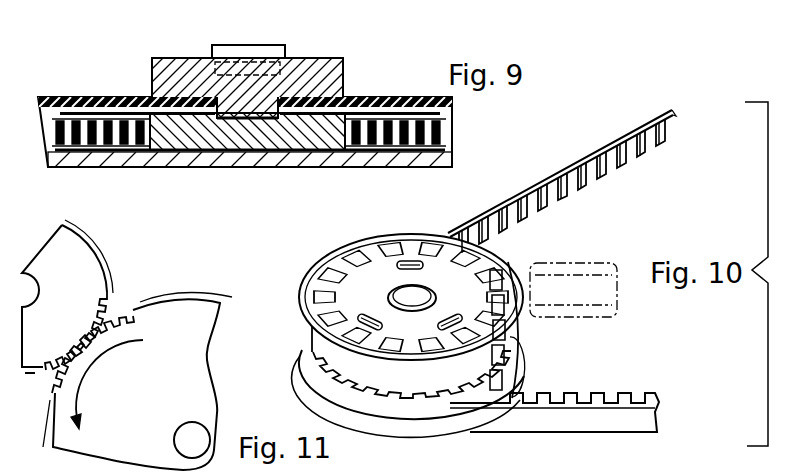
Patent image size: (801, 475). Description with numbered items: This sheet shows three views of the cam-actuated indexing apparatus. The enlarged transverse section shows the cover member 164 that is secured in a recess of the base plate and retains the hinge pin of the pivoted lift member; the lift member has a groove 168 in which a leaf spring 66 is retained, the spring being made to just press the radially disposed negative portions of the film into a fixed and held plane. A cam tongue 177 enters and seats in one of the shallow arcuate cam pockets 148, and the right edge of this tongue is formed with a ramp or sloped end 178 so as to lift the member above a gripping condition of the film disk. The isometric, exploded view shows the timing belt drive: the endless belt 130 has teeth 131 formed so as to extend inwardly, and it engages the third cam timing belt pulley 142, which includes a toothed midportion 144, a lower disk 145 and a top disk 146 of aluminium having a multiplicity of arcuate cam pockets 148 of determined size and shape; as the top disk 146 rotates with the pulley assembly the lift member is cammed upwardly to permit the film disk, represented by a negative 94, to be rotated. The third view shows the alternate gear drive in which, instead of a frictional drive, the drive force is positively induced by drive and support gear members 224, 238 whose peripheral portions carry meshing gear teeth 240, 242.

In FIG. 9, the leaf spring 66 is at (248, 52).
In FIG. 10, the negatives 94 is at (588, 278).
In FIG. 9, the belt 130 is at (455, 125).
In FIG. 10, the belt 130 is at (617, 138).
In FIG. 10, the teeth 131 is at (621, 172).
In FIG. 9, the third cam timing belt pulley 142 is at (196, 135).
In FIG. 10, the third cam timing belt pulley 142 is at (430, 320).
In FIG. 10, the toothed midportion 144 is at (470, 378).
In FIG. 10, the lower disk 145 is at (518, 380).
In FIG. 10, the top disk 146 is at (385, 262).
In FIG. 10, the arcuate cam pockets 148 is at (320, 297).
In FIG. 9, the cover member 164 is at (56, 97).
In FIG. 9, the groove 168 is at (340, 72).
In FIG. 9, the cam tongue 177 is at (283, 77).
In FIG. 9, the ramp or sloped end 178 is at (330, 166).
In FIG. 11, the drive gear member 224 is at (187, 310).
In FIG. 11, the support gear member 238 is at (75, 255).
In FIG. 11, the gear teeth 240 is at (122, 310).
In FIG. 11, the gear teeth 242 is at (47, 363).